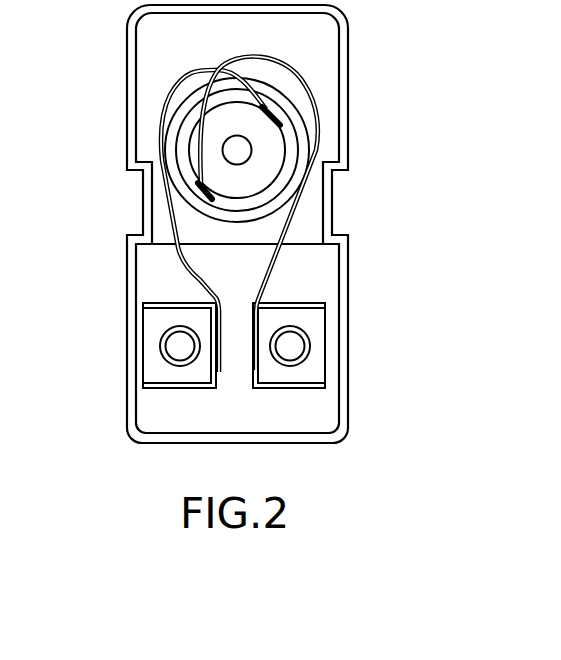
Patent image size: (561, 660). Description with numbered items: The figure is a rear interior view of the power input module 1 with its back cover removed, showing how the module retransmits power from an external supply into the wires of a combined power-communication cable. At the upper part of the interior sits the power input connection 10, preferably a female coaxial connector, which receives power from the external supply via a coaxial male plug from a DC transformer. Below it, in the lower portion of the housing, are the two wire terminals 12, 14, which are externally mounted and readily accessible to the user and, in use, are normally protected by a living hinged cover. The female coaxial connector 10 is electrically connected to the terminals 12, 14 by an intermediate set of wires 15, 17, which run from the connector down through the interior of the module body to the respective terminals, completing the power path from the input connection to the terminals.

The power input module 1 is at (365, 213).
The power input connection 10 is at (300, 132).
The wire terminal 12 is at (290, 346).
The wire terminal 14 is at (165, 347).
The intermediate wire 15 is at (308, 273).
The intermediate wire 17 is at (163, 280).